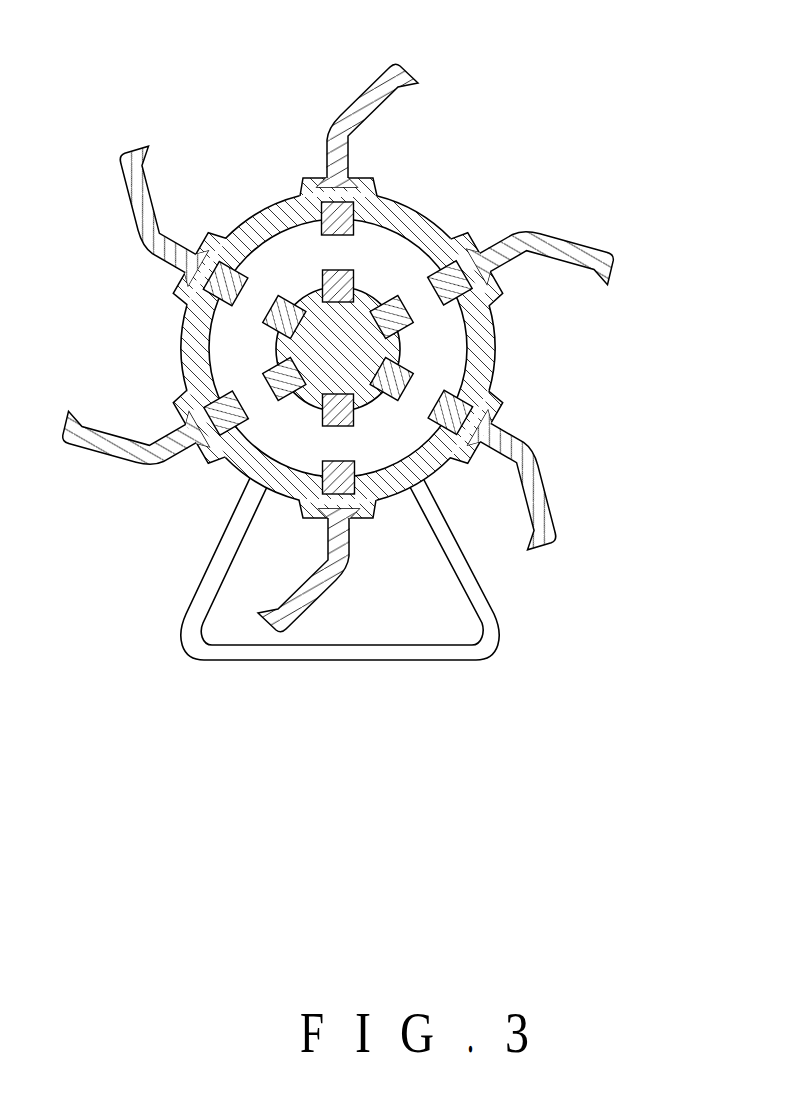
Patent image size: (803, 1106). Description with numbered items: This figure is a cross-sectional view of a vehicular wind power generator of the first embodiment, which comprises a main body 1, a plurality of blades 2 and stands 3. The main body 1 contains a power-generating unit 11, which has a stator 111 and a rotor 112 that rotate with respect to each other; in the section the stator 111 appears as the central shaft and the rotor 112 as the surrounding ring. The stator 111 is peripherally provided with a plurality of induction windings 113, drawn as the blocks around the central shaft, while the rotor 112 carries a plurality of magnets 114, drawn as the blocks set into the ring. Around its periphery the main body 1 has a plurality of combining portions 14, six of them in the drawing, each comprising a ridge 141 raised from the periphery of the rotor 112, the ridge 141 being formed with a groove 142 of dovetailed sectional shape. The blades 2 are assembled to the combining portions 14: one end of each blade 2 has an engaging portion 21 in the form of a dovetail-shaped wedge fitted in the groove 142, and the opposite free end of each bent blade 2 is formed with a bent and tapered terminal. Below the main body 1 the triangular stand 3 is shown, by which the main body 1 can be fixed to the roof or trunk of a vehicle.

The main body 1 is at (236, 182).
The power-generating unit 11 is at (660, 537).
The stator 111 is at (363, 345).
The rotor 112 is at (460, 415).
The induction windings 113 is at (403, 323).
The magnets 114 is at (482, 383).
The combining portions 14 is at (542, 115).
The ridge 141 is at (467, 242).
The groove 142 is at (477, 248).
The blades 2 is at (562, 243).
The engaging portion 21 is at (502, 282).
The stands 3 is at (483, 612).